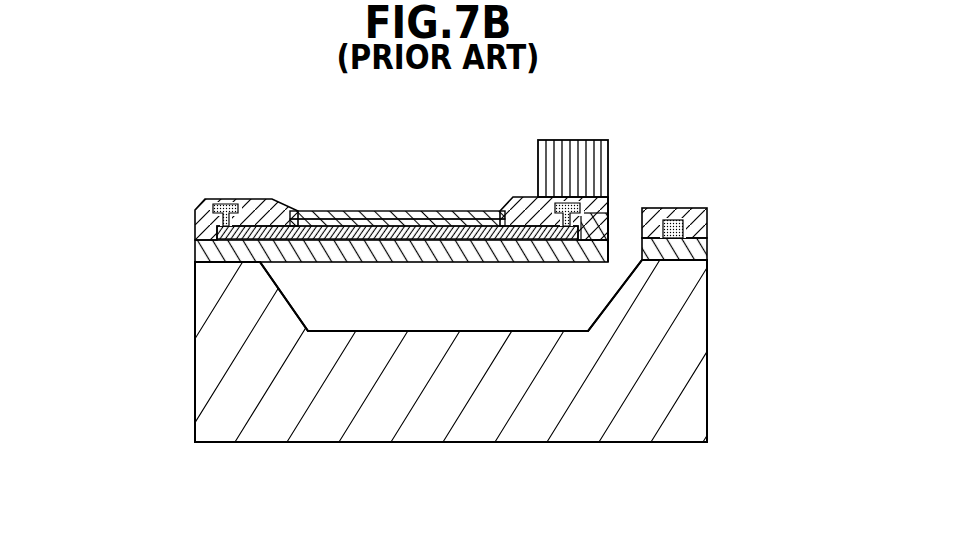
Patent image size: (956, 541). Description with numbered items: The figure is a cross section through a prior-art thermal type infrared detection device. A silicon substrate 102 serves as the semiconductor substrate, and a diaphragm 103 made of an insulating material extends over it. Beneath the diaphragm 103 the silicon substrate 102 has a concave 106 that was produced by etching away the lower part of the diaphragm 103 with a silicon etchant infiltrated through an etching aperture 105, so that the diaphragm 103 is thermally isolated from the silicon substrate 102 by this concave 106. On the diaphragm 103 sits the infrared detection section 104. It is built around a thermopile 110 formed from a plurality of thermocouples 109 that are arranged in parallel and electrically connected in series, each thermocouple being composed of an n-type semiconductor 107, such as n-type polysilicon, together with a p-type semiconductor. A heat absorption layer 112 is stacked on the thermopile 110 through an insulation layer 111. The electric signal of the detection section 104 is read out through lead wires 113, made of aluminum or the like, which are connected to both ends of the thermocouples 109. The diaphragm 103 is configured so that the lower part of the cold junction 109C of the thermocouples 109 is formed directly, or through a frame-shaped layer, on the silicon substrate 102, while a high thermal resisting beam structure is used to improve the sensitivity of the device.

The silicon substrate 102 is at (708, 318).
The diaphragm 103 is at (400, 262).
The infrared detection section 104 is at (627, 169).
The etching aperture 105 is at (623, 226).
The concave 106 is at (527, 303).
The n-type semiconductor 107 is at (394, 230).
The thermocouples 109 is at (397, 222).
The cold junction 109C is at (252, 198).
The thermopile 110 is at (304, 212).
The insulation layer 111 is at (519, 200).
The heat absorption layer 112 is at (577, 149).
The lead wires 113 is at (212, 219).